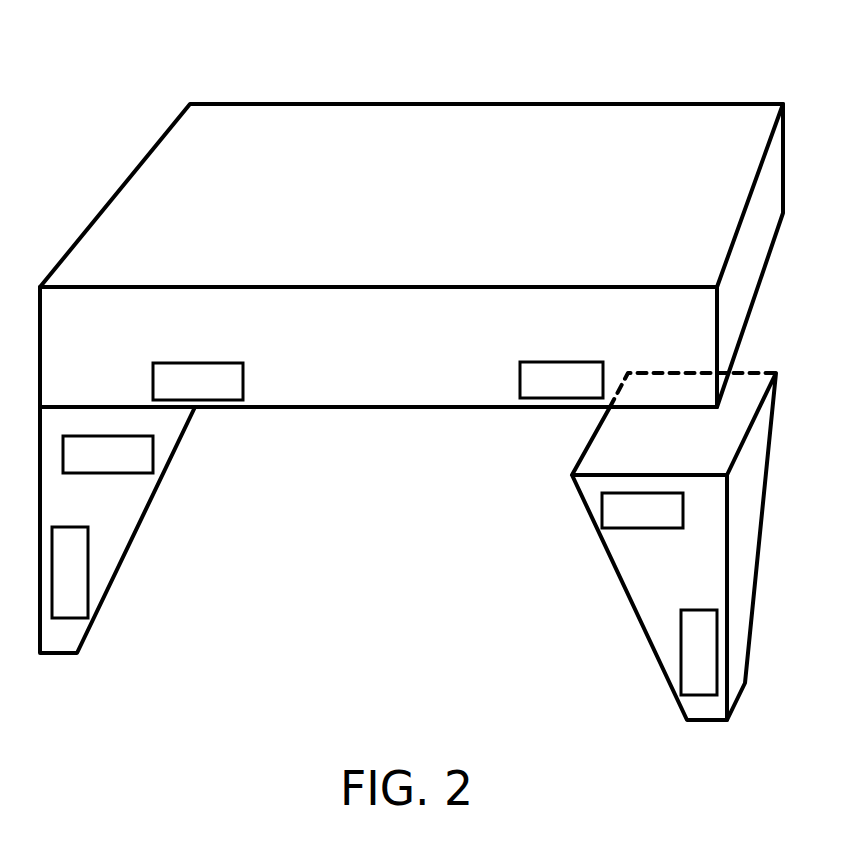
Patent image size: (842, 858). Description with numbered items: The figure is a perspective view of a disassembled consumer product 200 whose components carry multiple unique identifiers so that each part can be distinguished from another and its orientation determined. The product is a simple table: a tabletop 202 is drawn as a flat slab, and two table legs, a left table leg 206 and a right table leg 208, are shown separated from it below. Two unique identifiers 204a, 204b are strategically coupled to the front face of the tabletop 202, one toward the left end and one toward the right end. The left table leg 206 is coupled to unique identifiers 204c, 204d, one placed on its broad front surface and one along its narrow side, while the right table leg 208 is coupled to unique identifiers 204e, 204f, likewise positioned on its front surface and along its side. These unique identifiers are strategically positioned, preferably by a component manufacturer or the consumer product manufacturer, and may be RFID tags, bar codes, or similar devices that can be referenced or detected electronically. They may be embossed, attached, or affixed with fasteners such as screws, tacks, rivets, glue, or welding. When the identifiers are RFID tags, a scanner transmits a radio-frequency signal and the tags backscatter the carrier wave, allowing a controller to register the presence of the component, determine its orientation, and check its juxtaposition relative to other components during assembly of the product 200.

The disassembled consumer product 200 is at (200, 97).
The tabletop 202 is at (512, 189).
The unique identifier 204a is at (227, 391).
The unique identifier 204b is at (533, 389).
The unique identifier 204c is at (80, 465).
The unique identifier 204d is at (70, 572).
The unique identifier 204e is at (614, 521).
The unique identifier 204f is at (699, 652).
The left table leg 206 is at (133, 542).
The right table leg 208 is at (632, 605).